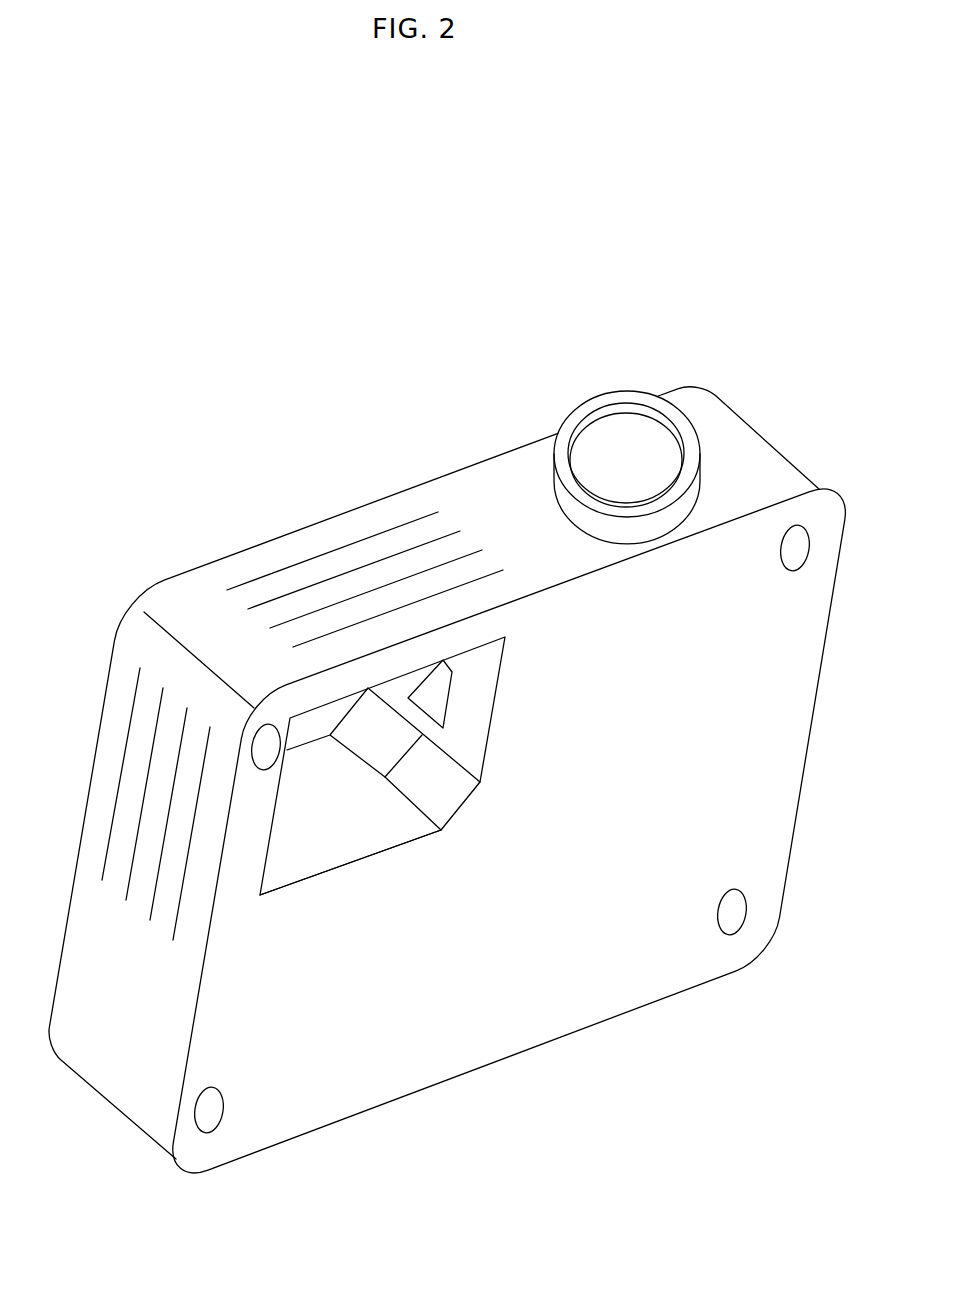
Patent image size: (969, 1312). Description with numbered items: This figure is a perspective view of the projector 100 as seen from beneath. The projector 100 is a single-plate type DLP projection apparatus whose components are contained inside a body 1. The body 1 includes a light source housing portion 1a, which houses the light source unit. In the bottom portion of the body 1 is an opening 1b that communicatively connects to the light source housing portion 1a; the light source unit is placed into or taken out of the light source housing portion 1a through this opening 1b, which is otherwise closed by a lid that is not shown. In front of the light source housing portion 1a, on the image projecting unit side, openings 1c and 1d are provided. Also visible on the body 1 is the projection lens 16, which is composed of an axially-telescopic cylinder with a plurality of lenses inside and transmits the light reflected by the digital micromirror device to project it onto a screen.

The projector 100 is at (715, 304).
The body 1 is at (470, 464).
The light source housing portion 1a is at (328, 805).
The opening 1b is at (382, 855).
The opening 1c is at (437, 698).
The opening 1d is at (388, 745).
The projection lens 16 is at (601, 395).